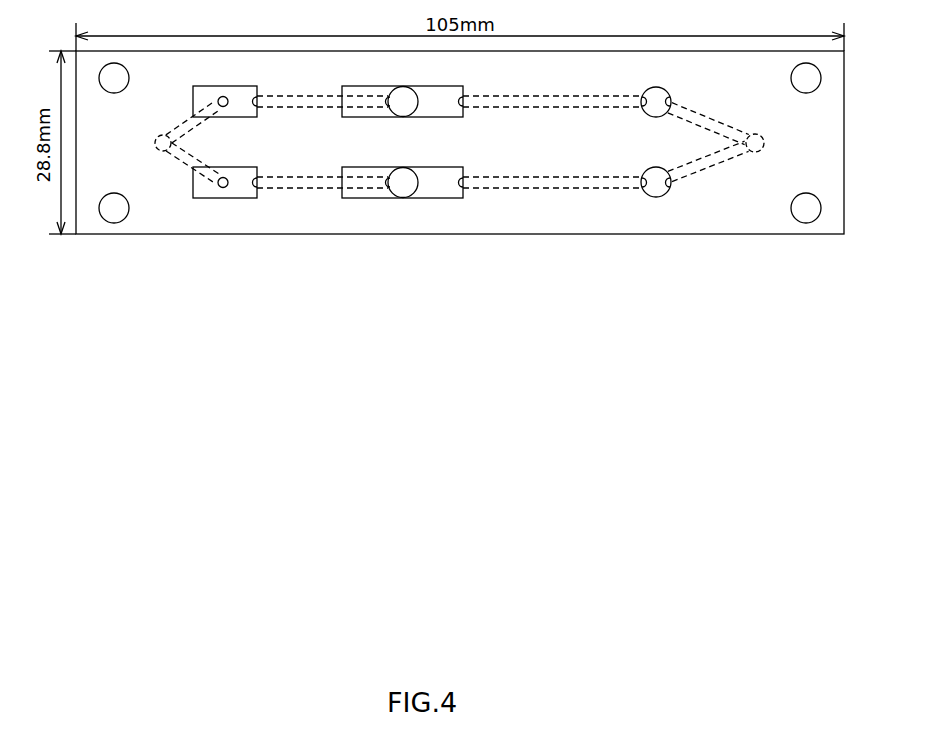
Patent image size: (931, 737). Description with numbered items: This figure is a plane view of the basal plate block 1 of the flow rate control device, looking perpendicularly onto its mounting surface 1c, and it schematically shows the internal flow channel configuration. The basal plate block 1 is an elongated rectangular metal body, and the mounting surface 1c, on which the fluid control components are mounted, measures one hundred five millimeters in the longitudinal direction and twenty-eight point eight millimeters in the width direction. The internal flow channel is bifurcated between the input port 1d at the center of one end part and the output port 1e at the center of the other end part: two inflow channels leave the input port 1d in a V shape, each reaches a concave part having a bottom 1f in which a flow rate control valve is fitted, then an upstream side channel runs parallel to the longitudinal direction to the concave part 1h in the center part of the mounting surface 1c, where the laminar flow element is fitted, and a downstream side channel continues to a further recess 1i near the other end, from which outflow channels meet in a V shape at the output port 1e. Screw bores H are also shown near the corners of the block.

The basal plate block 1 is at (460, 262).
The mounting surface 1c is at (686, 235).
The input port 1d is at (155, 143).
The output port 1e is at (765, 143).
The concave part having a bottom 1f is at (219, 86).
The concave part 1h is at (425, 86).
The third chamber 1i is at (669, 92).
The screw bore H is at (130, 74).